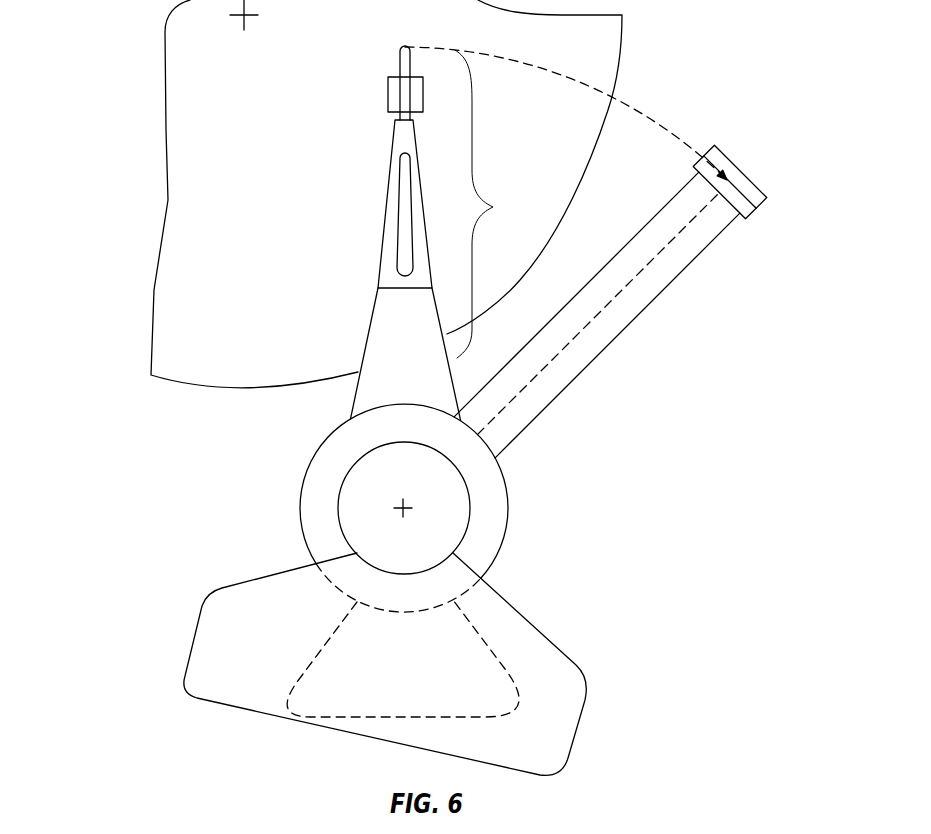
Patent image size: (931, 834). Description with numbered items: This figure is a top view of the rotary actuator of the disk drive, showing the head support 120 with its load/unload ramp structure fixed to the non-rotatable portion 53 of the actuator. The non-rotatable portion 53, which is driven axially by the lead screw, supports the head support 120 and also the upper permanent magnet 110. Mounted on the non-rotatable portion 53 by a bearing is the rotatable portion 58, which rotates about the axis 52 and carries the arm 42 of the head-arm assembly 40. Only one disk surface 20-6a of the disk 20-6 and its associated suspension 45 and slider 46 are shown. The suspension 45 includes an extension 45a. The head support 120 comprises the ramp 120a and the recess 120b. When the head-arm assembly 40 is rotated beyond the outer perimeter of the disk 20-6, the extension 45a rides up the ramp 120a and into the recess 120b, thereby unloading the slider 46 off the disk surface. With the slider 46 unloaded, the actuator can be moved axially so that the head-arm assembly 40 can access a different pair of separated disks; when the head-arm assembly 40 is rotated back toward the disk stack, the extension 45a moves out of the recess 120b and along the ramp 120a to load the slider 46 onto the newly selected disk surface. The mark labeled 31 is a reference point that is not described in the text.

The disk 20-6 is at (622, 63).
The disk surface 20-6a is at (176, 249).
The reference point 31 is at (242, 18).
The head-arm assembly 40 is at (489, 204).
The extension 45a is at (399, 62).
The slider 46 is at (388, 95).
The suspension 45 is at (387, 205).
The arm 42 is at (371, 327).
The head support 120 is at (624, 326).
The ramp 120a is at (723, 147).
The recess 120b is at (740, 178).
The rotatable portion 58 is at (335, 432).
The non-rotatable portion 53 is at (339, 505).
The axis 52 is at (398, 507).
The upper permanent magnet 110 is at (207, 648).